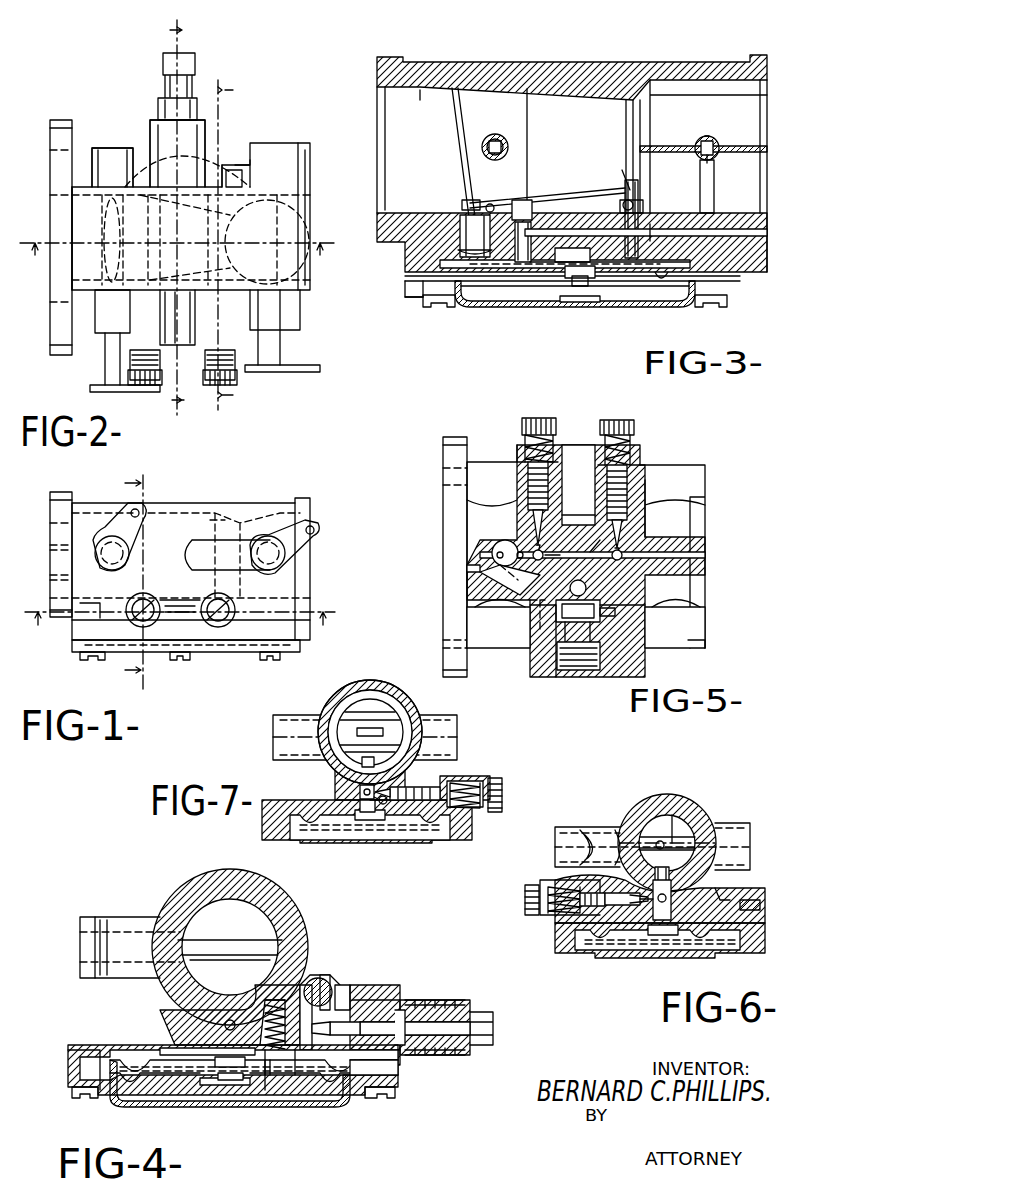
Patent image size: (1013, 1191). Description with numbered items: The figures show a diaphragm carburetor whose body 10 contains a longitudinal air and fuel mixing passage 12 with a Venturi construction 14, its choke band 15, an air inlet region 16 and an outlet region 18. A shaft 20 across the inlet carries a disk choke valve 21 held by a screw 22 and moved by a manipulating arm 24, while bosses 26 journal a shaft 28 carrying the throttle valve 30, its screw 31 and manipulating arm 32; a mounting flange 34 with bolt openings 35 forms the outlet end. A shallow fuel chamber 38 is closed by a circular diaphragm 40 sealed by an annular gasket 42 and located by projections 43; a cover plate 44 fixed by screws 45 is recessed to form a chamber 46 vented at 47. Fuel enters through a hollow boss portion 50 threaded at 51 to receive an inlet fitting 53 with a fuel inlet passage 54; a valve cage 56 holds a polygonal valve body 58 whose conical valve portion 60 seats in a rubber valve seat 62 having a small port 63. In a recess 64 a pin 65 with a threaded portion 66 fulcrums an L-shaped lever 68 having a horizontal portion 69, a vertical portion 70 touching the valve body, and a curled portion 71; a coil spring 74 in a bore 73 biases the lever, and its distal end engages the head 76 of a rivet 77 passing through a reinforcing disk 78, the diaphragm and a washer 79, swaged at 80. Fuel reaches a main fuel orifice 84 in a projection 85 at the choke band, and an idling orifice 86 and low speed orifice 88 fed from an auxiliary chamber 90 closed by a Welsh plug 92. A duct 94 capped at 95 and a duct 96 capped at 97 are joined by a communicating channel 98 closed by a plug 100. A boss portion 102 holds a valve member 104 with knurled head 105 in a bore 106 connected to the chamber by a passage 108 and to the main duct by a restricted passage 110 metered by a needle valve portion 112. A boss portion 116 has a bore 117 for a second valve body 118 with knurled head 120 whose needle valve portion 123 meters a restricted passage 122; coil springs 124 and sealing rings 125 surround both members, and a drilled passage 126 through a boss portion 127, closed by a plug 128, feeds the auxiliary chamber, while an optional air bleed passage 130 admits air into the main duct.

In FIG. 2, the body member 10 is at (175, 180).
In FIG. 3, the body member 10 is at (552, 62).
In FIG. 1, the body member 10 is at (224, 500).
In FIG. 7, the body member 10 is at (365, 740).
In FIG. 6, the body member 10 is at (704, 802).
In FIG. 4, the body member 10 is at (304, 908).
In FIG. 2, the air and fuel mixing passage 12 is at (185, 268).
In FIG. 3, the air and fuel mixing passage 12 is at (568, 142).
In FIG. 1, the air and fuel mixing passage 12 is at (183, 500).
In FIG. 3, the Venturi construction 14 is at (658, 108).
In FIG. 2, the choke band 15 is at (207, 222).
In FIG. 3, the choke band 15 is at (626, 118).
In FIG. 1, the choke band 15 is at (207, 532).
In FIG. 6, the choke band 15 is at (700, 826).
In FIG. 2, the air inlet region 16 is at (312, 208).
In FIG. 3, the air inlet region 16 is at (762, 176).
In FIG. 1, the air inlet region 16 is at (312, 510).
In FIG. 2, the outlet region 18 is at (50, 209).
In FIG. 3, the outlet region 18 is at (378, 106).
In FIG. 1, the outlet region 18 is at (52, 520).
In FIG. 2, the shaft 20 is at (280, 352).
In FIG. 3, the shaft 20 is at (712, 160).
In FIG. 1, the shaft 20 is at (285, 560).
In FIG. 7, the shaft 20 is at (395, 728).
In FIG. 2, the choke valve 21 is at (300, 265).
In FIG. 3, the choke valve 21 is at (660, 148).
In FIG. 3, the screw 22 is at (710, 138).
In FIG. 2, the manipulating arm 24 is at (296, 374).
In FIG. 1, the manipulating arm 24 is at (318, 532).
In FIG. 2, the bosses 26 is at (90, 150).
In FIG. 5, the bosses 26 is at (480, 492).
In FIG. 6, the bosses 26 is at (588, 817).
In FIG. 4, the bosses 26 is at (138, 912).
In FIG. 2, the shaft 28 is at (105, 372).
In FIG. 3, the shaft 28 is at (495, 136).
In FIG. 6, the shaft 28 is at (672, 814).
In FIG. 4, the shaft 28 is at (90, 930).
In FIG. 2, the throttle valve 30 is at (103, 230).
In FIG. 3, the throttle valve 30 is at (460, 116).
In FIG. 3, the screw 31 is at (484, 143).
In FIG. 2, the manipulating arm 32 is at (92, 392).
In FIG. 1, the manipulating arm 32 is at (125, 510).
In FIG. 2, the mounting flange 34 is at (52, 305).
In FIG. 1, the mounting flange 34 is at (52, 580).
In FIG. 5, the mounting flange 34 is at (444, 447).
In FIG. 2, the openings 35 is at (52, 147).
In FIG. 1, the openings 35 is at (52, 549).
In FIG. 5, the openings 35 is at (444, 471).
In FIG. 3, the fuel chamber 38 is at (675, 268).
In FIG. 6, the fuel chamber 38 is at (688, 945).
In FIG. 4, the fuel chamber 38 is at (165, 1060).
In FIG. 3, the diaphragm 40 is at (667, 285).
In FIG. 4, the diaphragm 40 is at (168, 1085).
In FIG. 3, the annular gasket 42 is at (405, 262).
In FIG. 3, the projections 43 is at (410, 285).
In FIG. 3, the cover plate 44 is at (492, 303).
In FIG. 1, the cover plate 44 is at (170, 655).
In FIG. 7, the cover plate 44 is at (367, 821).
In FIG. 4, the cover plate 44 is at (280, 1080).
In FIG. 3, the screws 45 is at (432, 310).
In FIG. 1, the screws 45 is at (98, 662).
In FIG. 4, the screws 45 is at (72, 1092).
In FIG. 3, the chamber 46 is at (606, 295).
In FIG. 4, the chamber 46 is at (345, 1095).
In FIG. 3, the vent 47 is at (578, 303).
In FIG. 4, the vent 47 is at (220, 1082).
In FIG. 2, the hollow boss portion 50 is at (152, 118).
In FIG. 4, the hollow boss portion 50 is at (395, 985).
In FIG. 5, the threads 51 is at (556, 670).
In FIG. 4, the threads 51 is at (400, 1068).
In FIG. 2, the inlet fitting 53 is at (162, 100).
In FIG. 4, the inlet fitting 53 is at (430, 1000).
In FIG. 4, the fuel inlet passage 54 is at (493, 1027).
In FIG. 4, the valve cage 56 is at (368, 985).
In FIG. 4, the valve body 58 is at (340, 1040).
In FIG. 4, the valve portion 60 is at (350, 1062).
In FIG. 4, the valve seat 62 is at (365, 985).
In FIG. 4, the port 63 is at (403, 1010).
In FIG. 4, the recess 64 is at (328, 985).
In FIG. 5, the pin 65 is at (545, 635).
In FIG. 4, the pin 65 is at (330, 975).
In FIG. 2, the threaded portion 66 is at (236, 168).
In FIG. 5, the threaded portion 66 is at (602, 618).
In FIG. 4, the L-shaped lever 68 is at (266, 1095).
In FIG. 3, the horizontal portion 69 is at (548, 262).
In FIG. 5, the horizontal portion 69 is at (565, 580).
In FIG. 4, the horizontal portion 69 is at (281, 1076).
In FIG. 5, the vertical portion 70 is at (600, 640).
In FIG. 4, the vertical portion 70 is at (305, 1060).
In FIG. 5, the curled portion 71 is at (603, 656).
In FIG. 4, the curled portion 71 is at (310, 985).
In FIG. 5, the bore 73 is at (588, 590).
In FIG. 4, the bore 73 is at (262, 1000).
In FIG. 4, the coil spring 74 is at (270, 1003).
In FIG. 4, the head 76 is at (200, 1075).
In FIG. 4, the rivet 77 is at (232, 1068).
In FIG. 4, the reinforcing disk 78 is at (180, 1048).
In FIG. 4, the washer 79 is at (208, 1088).
In FIG. 3, the swaged end 80 is at (575, 247).
In FIG. 4, the swaged end 80 is at (222, 1022).
In FIG. 3, the main fuel orifice 84 is at (622, 180).
In FIG. 3, the projection 85 is at (640, 188).
In FIG. 7, the projection 85 is at (362, 760).
In FIG. 6, the projection 85 is at (675, 870).
In FIG. 3, the idling orifice 86 is at (466, 200).
In FIG. 5, the idling orifice 86 is at (498, 555).
In FIG. 3, the low speed orifice 88 is at (488, 204).
In FIG. 5, the low speed orifice 88 is at (518, 582).
In FIG. 3, the auxiliary chamber 90 is at (462, 230).
In FIG. 5, the auxiliary chamber 90 is at (498, 546).
In FIG. 3, the Welsh plug 92 is at (460, 253).
In FIG. 3, the duct 94 is at (622, 200).
In FIG. 5, the duct 94 is at (622, 560).
In FIG. 6, the duct 94 is at (672, 885).
In FIG. 3, the cap 95 is at (618, 275).
In FIG. 3, the duct 96 is at (522, 199).
In FIG. 5, the duct 96 is at (542, 558).
In FIG. 7, the duct 96 is at (360, 790).
In FIG. 3, the cap 97 is at (521, 242).
In FIG. 7, the cap 97 is at (355, 825).
In FIG. 3, the communicating channel 98 is at (562, 200).
In FIG. 5, the communicating channel 98 is at (602, 540).
In FIG. 7, the communicating channel 98 is at (358, 795).
In FIG. 6, the communicating channel 98 is at (668, 905).
In FIG. 3, the plug 100 is at (665, 233).
In FIG. 5, the plug 100 is at (640, 553).
In FIG. 5, the boss portion 102 is at (640, 456).
In FIG. 6, the boss portion 102 is at (565, 878).
In FIG. 5, the valve member 104 is at (628, 480).
In FIG. 5, the knurled head 105 is at (626, 418).
In FIG. 6, the knurled head 105 is at (525, 895).
In FIG. 5, the bore 106 is at (630, 512).
In FIG. 6, the passage 108 is at (620, 910).
In FIG. 5, the restricted passage 110 is at (628, 540).
In FIG. 6, the restricted passage 110 is at (648, 905).
In FIG. 5, the needle valve portion 112 is at (628, 530).
In FIG. 6, the needle valve portion 112 is at (640, 910).
In FIG. 5, the boss portion 116 is at (520, 470).
In FIG. 5, the bore 117 is at (530, 512).
In FIG. 7, the bore 117 is at (405, 805).
In FIG. 5, the valve body 118 is at (527, 486).
In FIG. 7, the valve body 118 is at (430, 805).
In FIG. 5, the knurled head 120 is at (534, 417).
In FIG. 7, the knurled head 120 is at (503, 780).
In FIG. 5, the restricted passage 122 is at (581, 521).
In FIG. 7, the restricted passage 122 is at (390, 803).
In FIG. 5, the needle valve portion 123 is at (581, 485).
In FIG. 7, the needle valve portion 123 is at (385, 805).
In FIG. 5, the coil springs 124 is at (524, 438).
In FIG. 7, the coil springs 124 is at (470, 783).
In FIG. 6, the coil springs 124 is at (546, 915).
In FIG. 5, the sealing rings 125 is at (565, 445).
In FIG. 7, the sealing rings 125 is at (455, 778).
In FIG. 6, the sealing rings 125 is at (582, 910).
In FIG. 5, the drilled passage 126 is at (532, 535).
In FIG. 5, the boss portion 127 is at (470, 570).
In FIG. 5, the plug 128 is at (500, 585).
In FIG. 3, the air bleed passage 130 is at (640, 205).